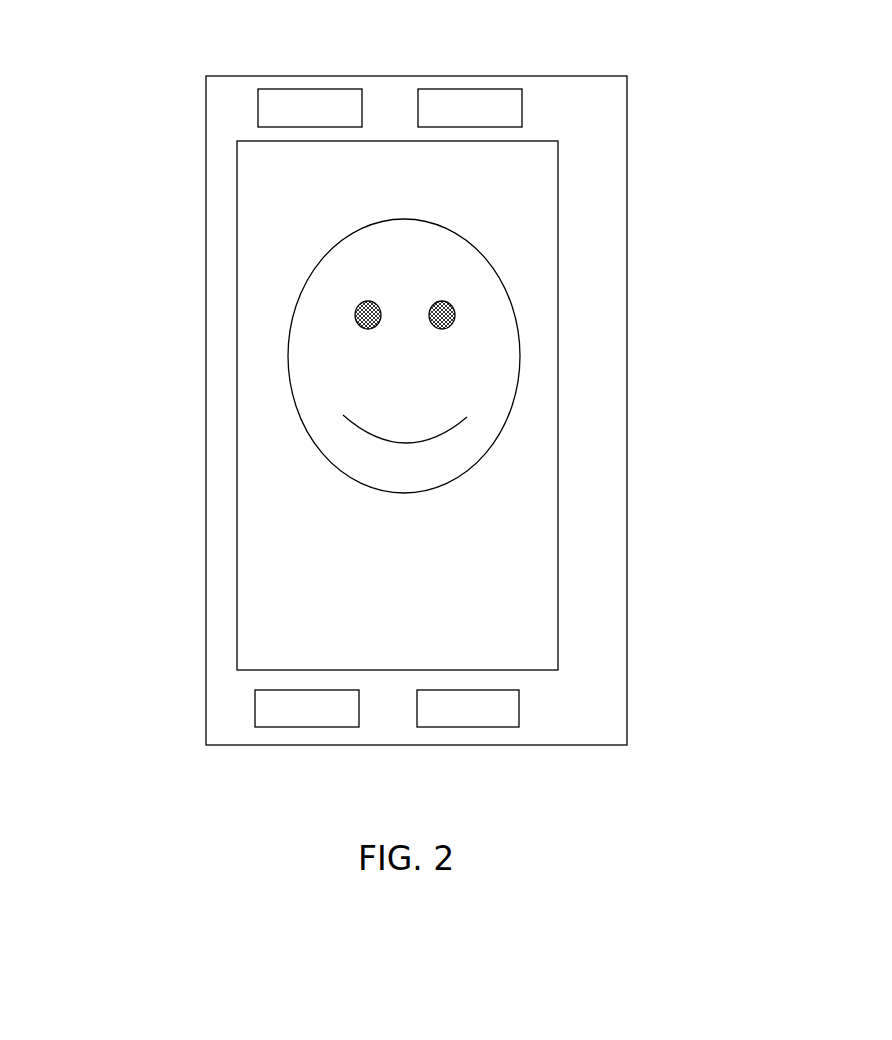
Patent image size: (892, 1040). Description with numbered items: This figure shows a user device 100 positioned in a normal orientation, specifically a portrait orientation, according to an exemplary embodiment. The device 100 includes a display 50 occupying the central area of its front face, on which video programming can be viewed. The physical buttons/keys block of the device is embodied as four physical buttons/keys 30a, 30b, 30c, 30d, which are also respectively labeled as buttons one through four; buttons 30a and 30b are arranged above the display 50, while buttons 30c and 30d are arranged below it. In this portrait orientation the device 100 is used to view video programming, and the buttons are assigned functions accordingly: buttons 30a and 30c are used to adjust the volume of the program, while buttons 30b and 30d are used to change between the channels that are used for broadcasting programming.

The user device 100 is at (608, 77).
The display 50 is at (558, 323).
The physical button/key 30a is at (305, 89).
The physical button/key 30b is at (466, 89).
The physical button/key 30c is at (255, 708).
The physical button/key 30d is at (519, 708).